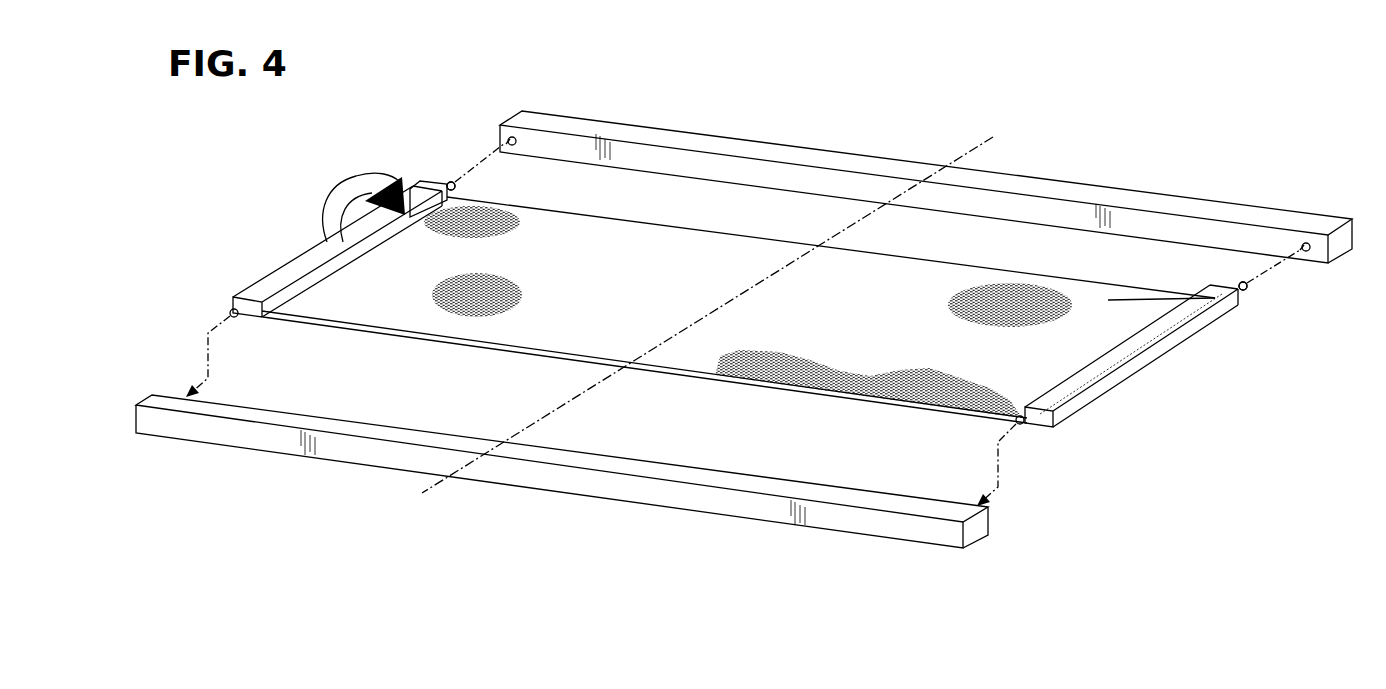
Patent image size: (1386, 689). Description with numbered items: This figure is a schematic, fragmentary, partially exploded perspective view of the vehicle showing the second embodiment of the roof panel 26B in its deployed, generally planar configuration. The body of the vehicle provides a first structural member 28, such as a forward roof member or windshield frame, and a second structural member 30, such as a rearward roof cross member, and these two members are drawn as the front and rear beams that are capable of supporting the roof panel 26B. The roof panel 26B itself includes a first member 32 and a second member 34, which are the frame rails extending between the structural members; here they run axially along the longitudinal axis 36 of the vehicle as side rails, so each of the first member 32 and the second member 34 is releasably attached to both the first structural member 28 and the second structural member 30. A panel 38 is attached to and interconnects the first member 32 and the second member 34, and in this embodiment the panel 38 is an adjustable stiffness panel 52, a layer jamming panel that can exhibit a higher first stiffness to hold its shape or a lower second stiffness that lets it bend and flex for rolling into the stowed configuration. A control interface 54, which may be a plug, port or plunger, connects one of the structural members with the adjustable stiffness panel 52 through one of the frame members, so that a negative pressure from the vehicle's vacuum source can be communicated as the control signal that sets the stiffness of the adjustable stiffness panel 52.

The roof panel (second embodiment) 26B is at (899, 78).
The first structural member 28 is at (372, 455).
The second structural member 30 is at (1028, 187).
The first member 32 is at (285, 278).
The second member 34 is at (1083, 397).
The longitudinal axis 36 is at (970, 147).
The panel 38 is at (1108, 312).
The adjustable stiffness panel 52 is at (613, 253).
The control interface 54 is at (458, 160).